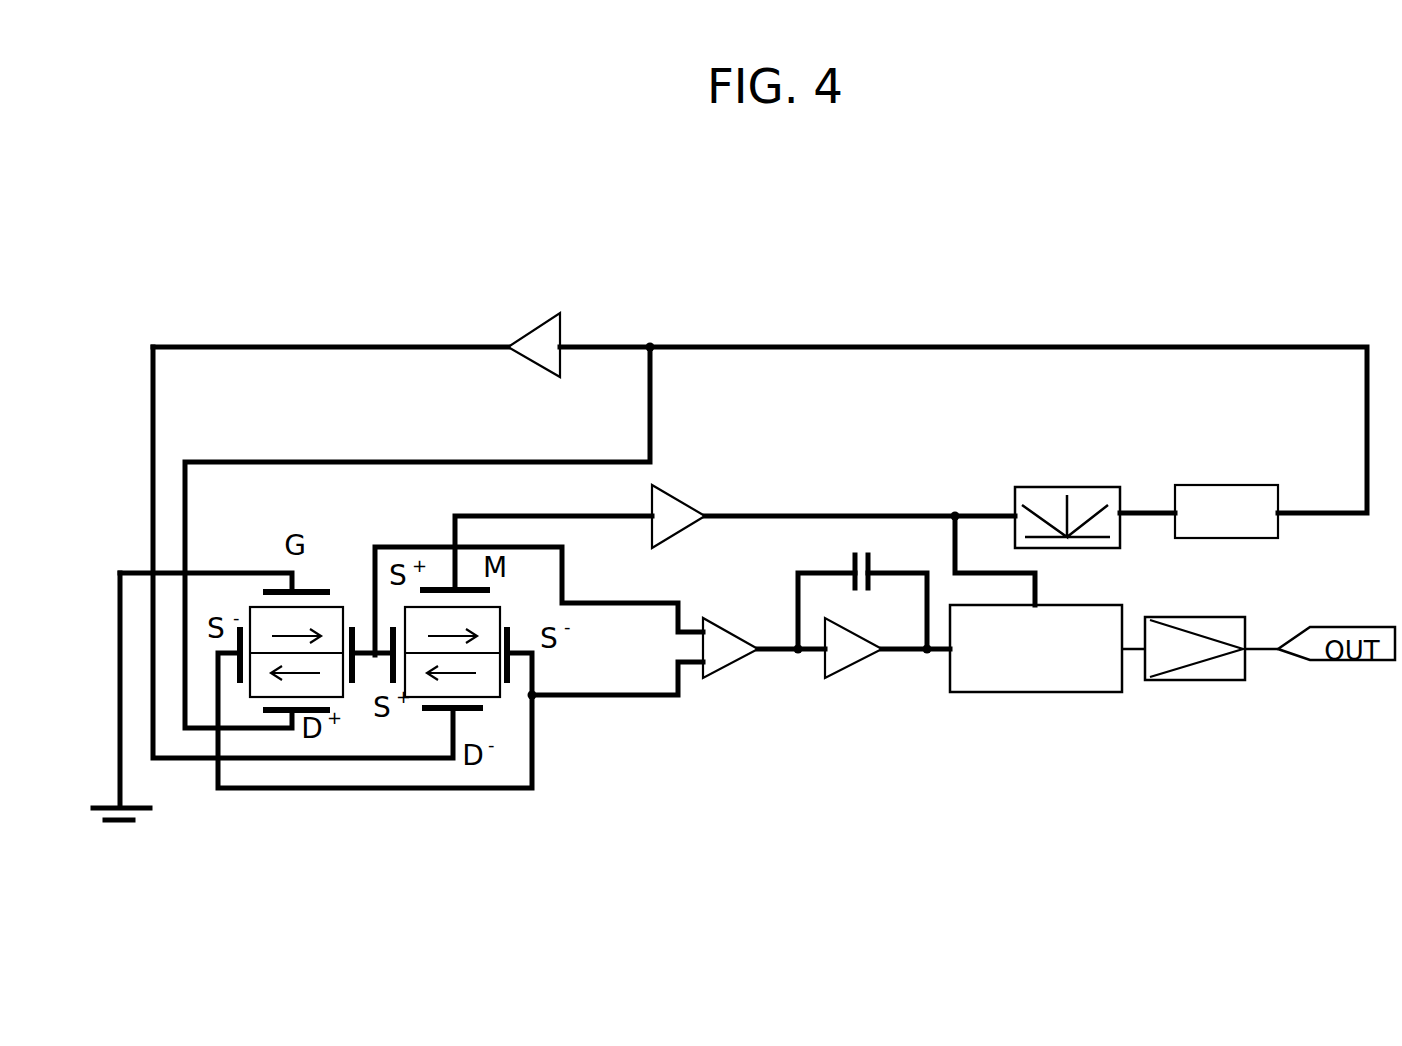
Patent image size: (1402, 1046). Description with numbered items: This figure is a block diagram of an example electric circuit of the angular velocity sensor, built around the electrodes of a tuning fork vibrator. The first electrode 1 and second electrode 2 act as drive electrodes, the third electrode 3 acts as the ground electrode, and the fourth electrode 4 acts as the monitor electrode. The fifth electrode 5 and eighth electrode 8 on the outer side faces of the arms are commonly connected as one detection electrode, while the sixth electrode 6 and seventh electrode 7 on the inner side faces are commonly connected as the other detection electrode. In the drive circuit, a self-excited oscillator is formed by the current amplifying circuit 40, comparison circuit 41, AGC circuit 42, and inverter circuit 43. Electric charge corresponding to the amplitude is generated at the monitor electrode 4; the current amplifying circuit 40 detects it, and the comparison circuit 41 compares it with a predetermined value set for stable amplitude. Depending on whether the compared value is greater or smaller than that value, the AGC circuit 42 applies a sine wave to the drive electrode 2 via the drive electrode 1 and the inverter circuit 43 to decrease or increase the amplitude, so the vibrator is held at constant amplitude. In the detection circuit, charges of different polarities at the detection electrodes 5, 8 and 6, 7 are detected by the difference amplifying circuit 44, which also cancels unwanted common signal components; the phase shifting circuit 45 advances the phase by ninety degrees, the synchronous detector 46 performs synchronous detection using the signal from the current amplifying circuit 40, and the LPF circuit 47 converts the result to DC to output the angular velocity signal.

The first electrode 1 is at (278, 715).
The second electrode 2 is at (435, 715).
The third electrode 3 is at (272, 588).
The fourth electrode 4 is at (443, 587).
The fifth electrode 5 is at (237, 682).
The sixth electrode 6 is at (350, 683).
The seventh electrode 7 is at (390, 643).
The eighth electrode 8 is at (507, 687).
The current amplifying circuit 40 is at (685, 500).
The comparison circuit 41 is at (1050, 487).
The AGC circuit 42 is at (1228, 485).
The inverter circuit 43 is at (540, 322).
The difference amplifying circuit 44 is at (727, 670).
The phase shifting circuit 45 is at (846, 670).
The synchronous detector 46 is at (1056, 690).
The LPF circuit 47 is at (1200, 682).